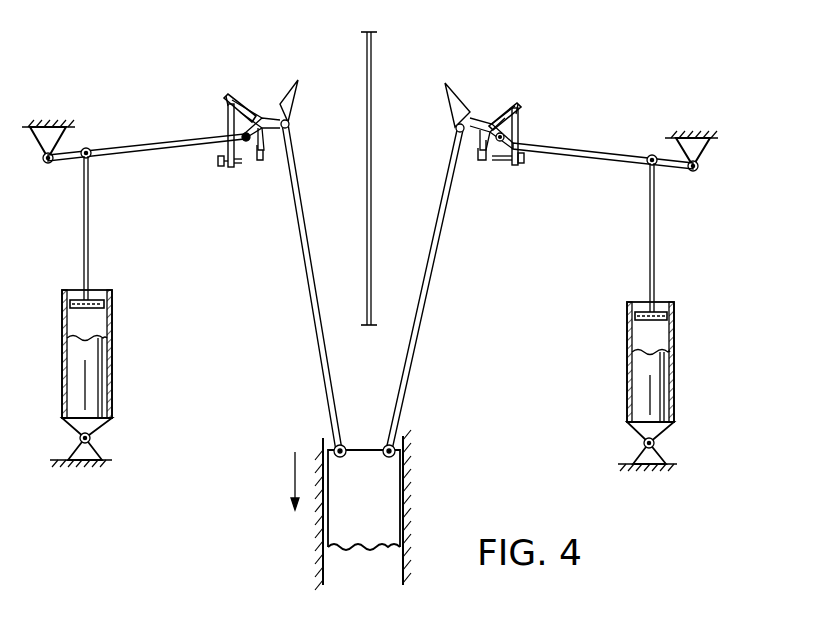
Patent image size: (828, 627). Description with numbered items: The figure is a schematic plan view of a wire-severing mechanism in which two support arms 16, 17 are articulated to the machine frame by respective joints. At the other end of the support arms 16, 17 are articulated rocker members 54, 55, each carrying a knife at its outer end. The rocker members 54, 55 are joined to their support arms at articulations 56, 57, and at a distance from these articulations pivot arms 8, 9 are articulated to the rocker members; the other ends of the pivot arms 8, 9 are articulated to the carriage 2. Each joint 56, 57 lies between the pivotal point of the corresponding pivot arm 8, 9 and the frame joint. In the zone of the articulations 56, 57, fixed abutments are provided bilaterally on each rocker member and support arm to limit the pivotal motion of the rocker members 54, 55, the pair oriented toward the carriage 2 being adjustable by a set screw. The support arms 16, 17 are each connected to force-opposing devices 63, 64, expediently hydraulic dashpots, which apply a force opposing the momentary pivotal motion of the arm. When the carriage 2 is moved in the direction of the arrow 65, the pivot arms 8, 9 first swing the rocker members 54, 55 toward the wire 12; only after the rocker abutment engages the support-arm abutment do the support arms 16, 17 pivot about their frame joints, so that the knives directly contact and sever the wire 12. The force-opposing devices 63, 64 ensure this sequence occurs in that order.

The carriage 2 is at (402, 500).
The pivot arm 8 is at (303, 206).
The pivot arm 9 is at (437, 198).
The wire 12 is at (372, 70).
The support arm 16 is at (136, 146).
The support arm 17 is at (610, 150).
The rocker member 54 is at (268, 112).
The rocker member 55 is at (476, 118).
The articulation 56 is at (241, 136).
The articulation 57 is at (505, 134).
The force-opposing device 63 is at (104, 356).
The force-opposing device 64 is at (632, 378).
The arrow 65 is at (294, 464).